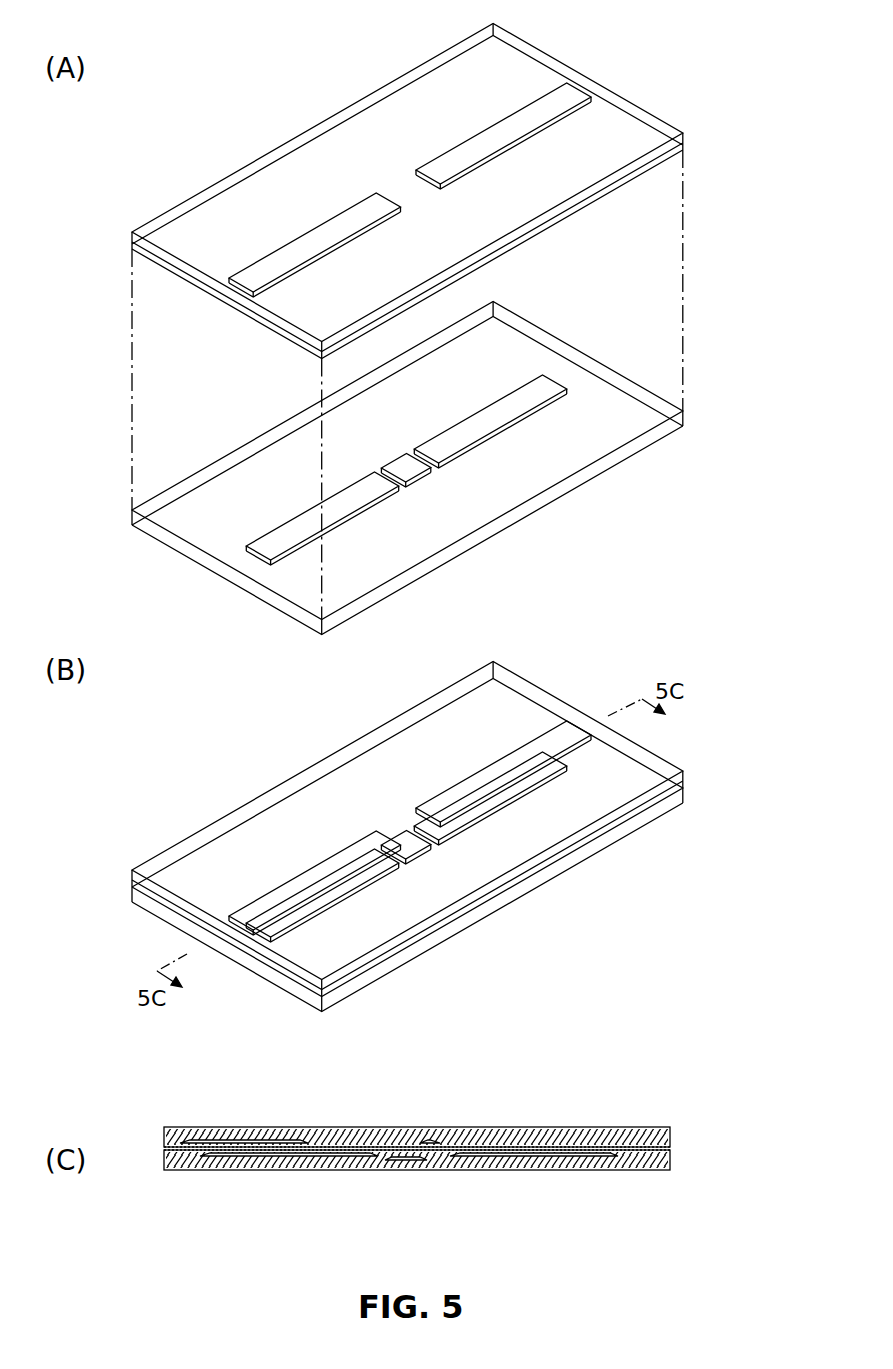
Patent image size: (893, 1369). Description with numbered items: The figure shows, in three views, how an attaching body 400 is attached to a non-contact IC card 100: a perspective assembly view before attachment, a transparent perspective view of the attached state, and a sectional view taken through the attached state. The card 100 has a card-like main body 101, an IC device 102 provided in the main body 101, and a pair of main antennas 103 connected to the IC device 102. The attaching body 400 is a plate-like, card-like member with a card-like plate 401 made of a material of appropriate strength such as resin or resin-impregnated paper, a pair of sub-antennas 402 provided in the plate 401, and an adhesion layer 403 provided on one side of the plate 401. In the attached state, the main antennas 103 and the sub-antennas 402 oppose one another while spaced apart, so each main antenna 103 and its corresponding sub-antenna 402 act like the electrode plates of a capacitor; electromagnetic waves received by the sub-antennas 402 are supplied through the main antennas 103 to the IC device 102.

The non-contact IC card 100 is at (475, 745).
The main body 101 is at (653, 437).
The IC device 102 is at (423, 470).
The main antennas 103 is at (517, 403).
The attaching body 400 is at (475, 588).
The plate 401 is at (310, 133).
The sub-antennas 402 is at (507, 125).
The adhesion layer 403 is at (243, 317).